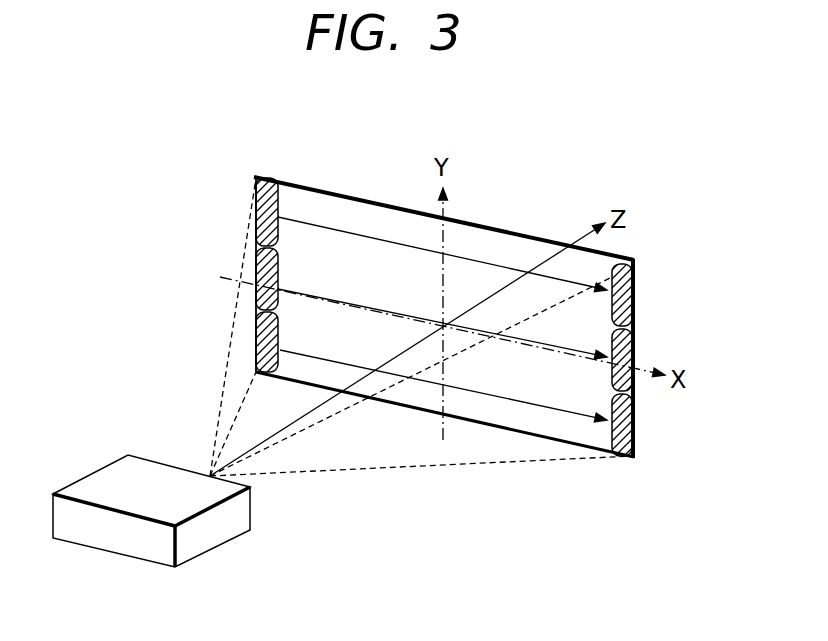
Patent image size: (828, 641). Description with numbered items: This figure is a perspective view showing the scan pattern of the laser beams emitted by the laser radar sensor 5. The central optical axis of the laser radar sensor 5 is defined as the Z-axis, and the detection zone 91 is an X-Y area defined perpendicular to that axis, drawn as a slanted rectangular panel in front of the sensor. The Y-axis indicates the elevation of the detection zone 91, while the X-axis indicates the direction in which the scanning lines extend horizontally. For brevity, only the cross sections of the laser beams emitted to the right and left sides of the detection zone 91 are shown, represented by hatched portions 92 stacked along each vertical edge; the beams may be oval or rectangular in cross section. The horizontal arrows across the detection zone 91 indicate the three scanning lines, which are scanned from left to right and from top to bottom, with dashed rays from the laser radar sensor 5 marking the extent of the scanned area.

The laser radar sensor 5 is at (228, 546).
The detection zone 91 is at (471, 226).
The hatched portions 92 is at (262, 188).